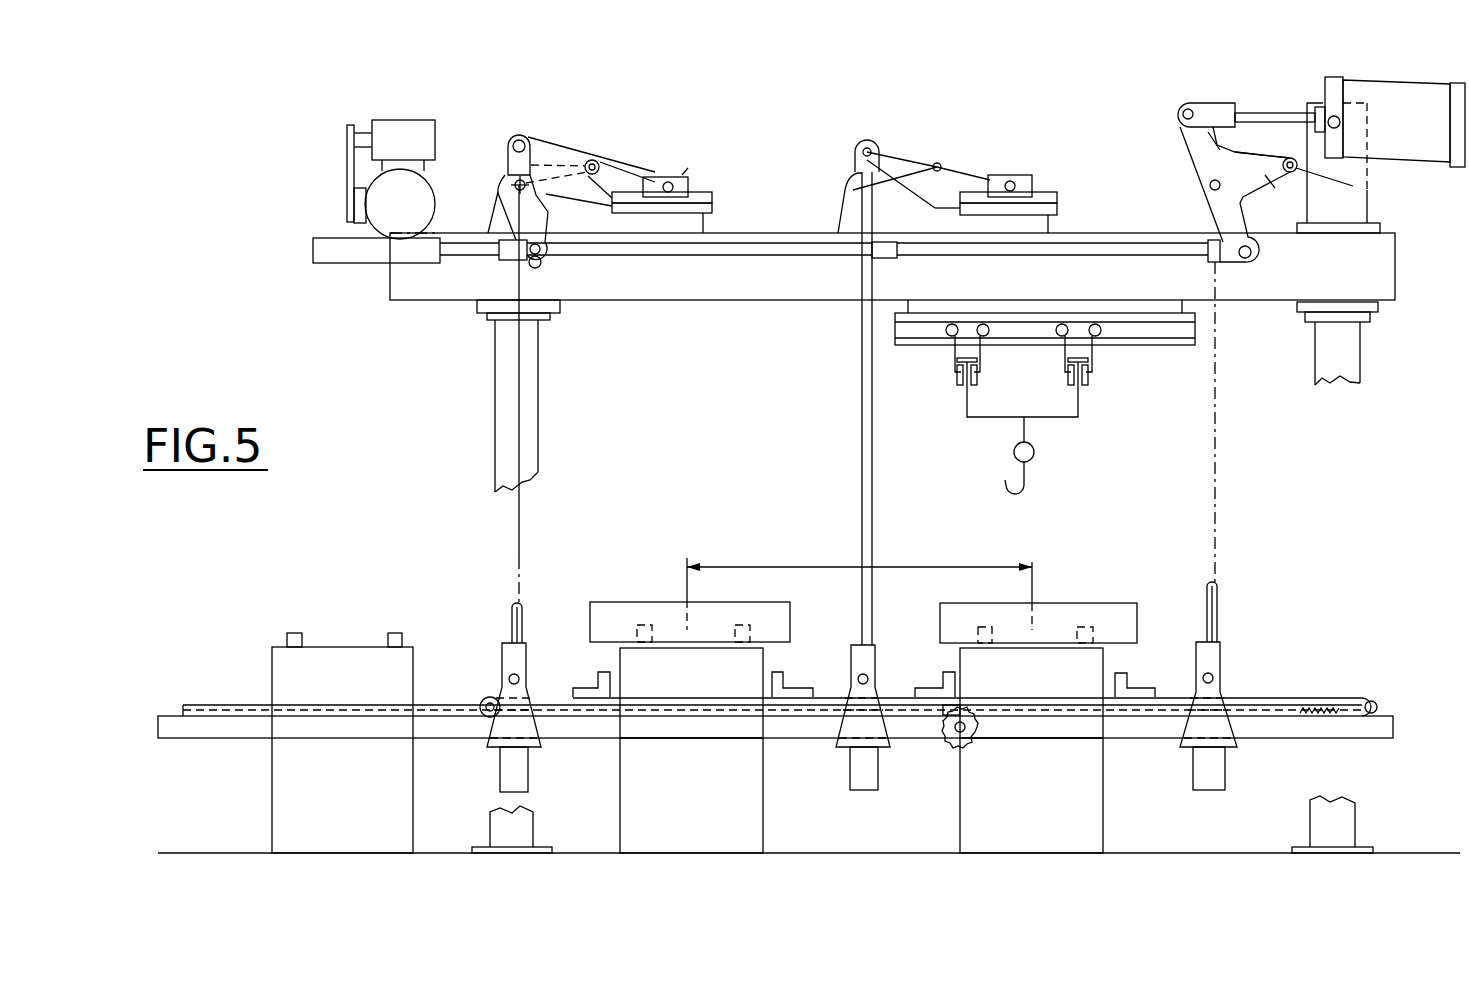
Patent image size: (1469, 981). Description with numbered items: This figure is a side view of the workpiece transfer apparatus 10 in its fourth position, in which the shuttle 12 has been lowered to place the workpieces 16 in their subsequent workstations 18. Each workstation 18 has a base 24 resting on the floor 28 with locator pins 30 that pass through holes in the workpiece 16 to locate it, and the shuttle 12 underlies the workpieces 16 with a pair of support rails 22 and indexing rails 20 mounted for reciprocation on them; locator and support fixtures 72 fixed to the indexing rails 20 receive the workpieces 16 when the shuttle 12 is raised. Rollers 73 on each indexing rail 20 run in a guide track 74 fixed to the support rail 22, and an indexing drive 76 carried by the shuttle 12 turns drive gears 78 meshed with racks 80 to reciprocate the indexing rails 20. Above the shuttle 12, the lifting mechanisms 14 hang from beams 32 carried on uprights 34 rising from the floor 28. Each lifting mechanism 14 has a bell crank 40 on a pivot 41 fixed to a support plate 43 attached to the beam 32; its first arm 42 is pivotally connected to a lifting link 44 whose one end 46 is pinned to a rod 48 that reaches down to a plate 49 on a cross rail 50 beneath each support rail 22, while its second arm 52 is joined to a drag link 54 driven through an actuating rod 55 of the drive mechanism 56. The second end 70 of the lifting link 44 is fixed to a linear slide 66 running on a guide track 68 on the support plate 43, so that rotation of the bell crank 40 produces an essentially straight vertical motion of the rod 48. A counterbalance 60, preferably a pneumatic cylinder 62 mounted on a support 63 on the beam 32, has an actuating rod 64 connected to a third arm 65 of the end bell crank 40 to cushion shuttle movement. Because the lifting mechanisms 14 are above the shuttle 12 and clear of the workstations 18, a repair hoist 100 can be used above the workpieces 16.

The workpiece transfer apparatus 10 is at (696, 68).
The shuttle 12 is at (1412, 690).
The lifting mechanism 14 is at (632, 143).
The workpiece 16 is at (625, 600).
The workstation 18 is at (258, 645).
The indexing rail 20 is at (1265, 697).
The support rail 22 is at (1395, 731).
The base 24 is at (275, 782).
The floor 28 is at (1398, 852).
The locator pin 30 is at (373, 628).
The beam 32 is at (1390, 252).
The upright 34 is at (495, 373).
The bell crank 40 is at (497, 182).
The pivot 41 is at (543, 197).
The first arm 42 is at (590, 160).
The support plate 43 is at (490, 215).
The lifting link 44 is at (537, 137).
The one end 46 is at (510, 138).
The rod 48 is at (512, 612).
The plate 49 is at (500, 725).
The cross rail 50 is at (530, 772).
The second arm 52 is at (545, 244).
The drag link 54 is at (742, 250).
The actuating rod 55 is at (470, 256).
The drive mechanism 56 is at (381, 104).
The counterbalance 60 is at (1378, 74).
The pneumatic cylinder 62 is at (1428, 94).
The support 63 is at (1368, 207).
The actuating rod 64 is at (1275, 115).
The third arm 65 is at (1182, 136).
The linear slide 66 is at (690, 181).
The guide track 68 is at (712, 194).
The second end 70 is at (684, 174).
The locator and support fixture 72 is at (592, 688).
The roller 73 is at (486, 698).
The guide track 74 is at (1283, 710).
The indexing drive 76 is at (936, 745).
The drive gear 78 is at (972, 745).
The rack 80 is at (1000, 713).
The repair hoist 100 is at (1125, 366).